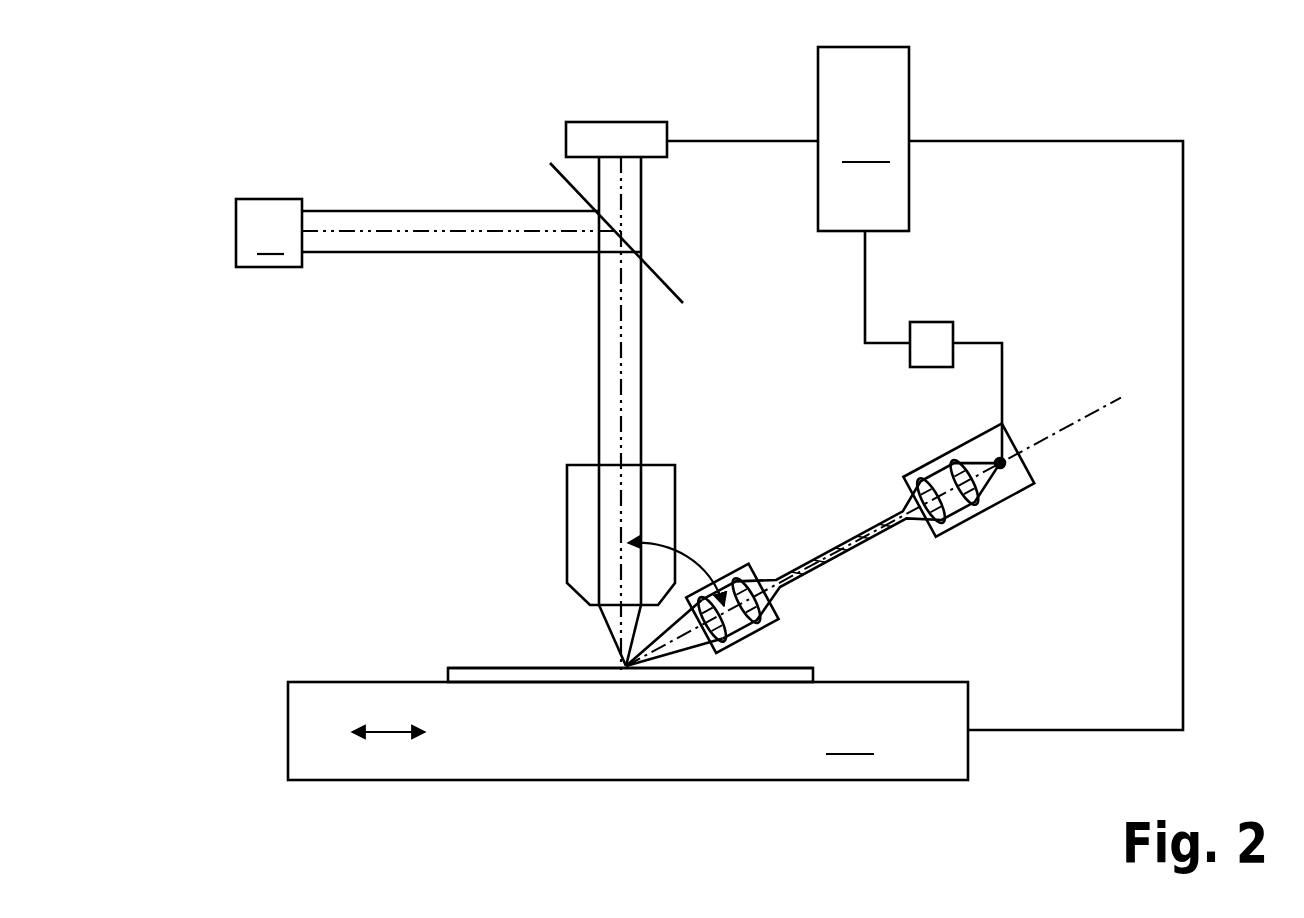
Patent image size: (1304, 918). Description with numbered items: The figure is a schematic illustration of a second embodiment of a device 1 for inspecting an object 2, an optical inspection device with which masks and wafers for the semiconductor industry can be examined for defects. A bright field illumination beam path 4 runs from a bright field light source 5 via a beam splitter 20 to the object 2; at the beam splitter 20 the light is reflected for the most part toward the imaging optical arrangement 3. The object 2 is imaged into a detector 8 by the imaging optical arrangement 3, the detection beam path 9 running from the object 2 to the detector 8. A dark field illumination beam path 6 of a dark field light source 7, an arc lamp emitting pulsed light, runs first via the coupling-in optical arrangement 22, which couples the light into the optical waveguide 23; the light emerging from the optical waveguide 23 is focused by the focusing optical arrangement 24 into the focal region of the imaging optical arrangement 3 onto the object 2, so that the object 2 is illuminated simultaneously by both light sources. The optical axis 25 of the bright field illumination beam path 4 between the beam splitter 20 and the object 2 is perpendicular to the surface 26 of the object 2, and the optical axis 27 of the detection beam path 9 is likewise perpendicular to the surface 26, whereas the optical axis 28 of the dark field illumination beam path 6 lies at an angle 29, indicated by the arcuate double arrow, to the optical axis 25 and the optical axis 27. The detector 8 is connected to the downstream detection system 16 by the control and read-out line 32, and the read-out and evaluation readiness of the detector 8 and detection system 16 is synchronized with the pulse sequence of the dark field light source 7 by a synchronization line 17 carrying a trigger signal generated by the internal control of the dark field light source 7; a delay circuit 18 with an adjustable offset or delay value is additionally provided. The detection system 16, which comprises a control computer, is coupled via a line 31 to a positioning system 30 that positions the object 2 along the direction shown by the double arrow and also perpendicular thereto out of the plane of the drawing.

The device 1 is at (305, 440).
The object 2 is at (448, 676).
The imaging optical arrangement 3 is at (566, 535).
The bright field illumination beam path 4 is at (423, 221).
The bright field light source 5 is at (269, 233).
The dark field illumination beam path 6 is at (858, 640).
The dark field light source 7 is at (1016, 455).
The detector 8 is at (616, 122).
The detection beam path 9 is at (632, 217).
The detection system 16 is at (863, 139).
The synchronization line 17 is at (865, 268).
The delay circuit 18 is at (932, 322).
The beam splitter 20 is at (557, 173).
The coupling-in optical arrangement 22 is at (975, 510).
The optical waveguide 23 is at (822, 567).
The focusing optical arrangement 24 is at (765, 620).
The optical axis of the bright field illumination beam path 25 is at (363, 234).
The surface 26 is at (473, 668).
The optical axis of the detection beam path 27 is at (622, 198).
The optical axis of the dark field illumination beam path 28 is at (1082, 421).
The angle 29 is at (693, 560).
The positioning system 30 is at (628, 731).
The line 31 is at (1182, 357).
The control and read-out line 32 is at (752, 140).